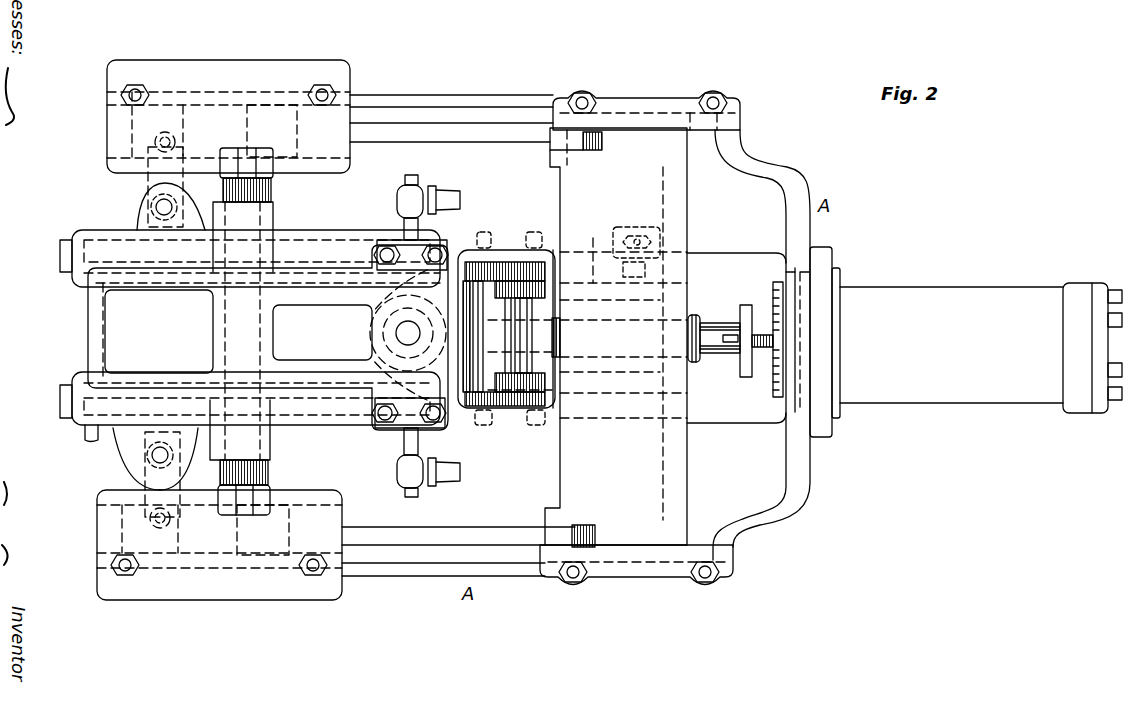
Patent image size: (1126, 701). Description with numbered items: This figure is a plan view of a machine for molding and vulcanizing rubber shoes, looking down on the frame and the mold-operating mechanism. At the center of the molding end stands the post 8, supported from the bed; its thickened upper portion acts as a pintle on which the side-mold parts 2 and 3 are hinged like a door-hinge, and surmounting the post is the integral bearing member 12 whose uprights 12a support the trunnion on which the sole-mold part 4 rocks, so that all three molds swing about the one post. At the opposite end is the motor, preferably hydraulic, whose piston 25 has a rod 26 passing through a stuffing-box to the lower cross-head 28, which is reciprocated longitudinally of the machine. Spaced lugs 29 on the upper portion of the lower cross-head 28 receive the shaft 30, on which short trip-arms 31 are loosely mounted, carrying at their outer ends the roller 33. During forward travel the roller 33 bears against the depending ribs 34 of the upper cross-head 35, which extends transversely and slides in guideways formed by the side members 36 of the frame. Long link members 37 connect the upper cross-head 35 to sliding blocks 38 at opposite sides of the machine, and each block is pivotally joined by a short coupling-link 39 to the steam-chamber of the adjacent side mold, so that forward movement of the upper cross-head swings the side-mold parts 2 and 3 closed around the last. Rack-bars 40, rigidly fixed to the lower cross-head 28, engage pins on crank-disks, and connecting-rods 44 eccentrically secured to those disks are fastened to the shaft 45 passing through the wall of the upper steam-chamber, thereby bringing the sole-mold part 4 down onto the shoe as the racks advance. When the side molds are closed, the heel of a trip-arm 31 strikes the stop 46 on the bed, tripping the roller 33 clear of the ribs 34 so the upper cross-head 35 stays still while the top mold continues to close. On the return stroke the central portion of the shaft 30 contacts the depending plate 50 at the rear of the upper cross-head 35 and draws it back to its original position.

The side-mold part 2 is at (130, 233).
The side-mold part 3 is at (75, 413).
The sole-mold part 4 is at (268, 337).
The post 8 is at (408, 333).
The bearing member 12 is at (447, 253).
The uprights 12a is at (405, 246).
The piston 25 is at (966, 342).
The rod 26 is at (715, 358).
The lower cross-head 28 is at (505, 378).
The lugs 29 is at (530, 268).
The shaft 30 is at (531, 382).
The trip-arms 31 is at (498, 268).
The roller 33 is at (470, 392).
The depending ribs 34 is at (595, 262).
The upper cross-head 35 is at (640, 458).
The side members 36 is at (642, 122).
The long link members 37 is at (482, 532).
The sliding blocks 38 is at (205, 105).
The coupling-link 39 is at (142, 193).
The rack-bars 40 is at (62, 262).
The connecting-rods 44 is at (273, 196).
The shaft 45 is at (255, 224).
The stop 46 is at (653, 273).
The depending plate 50 is at (700, 322).